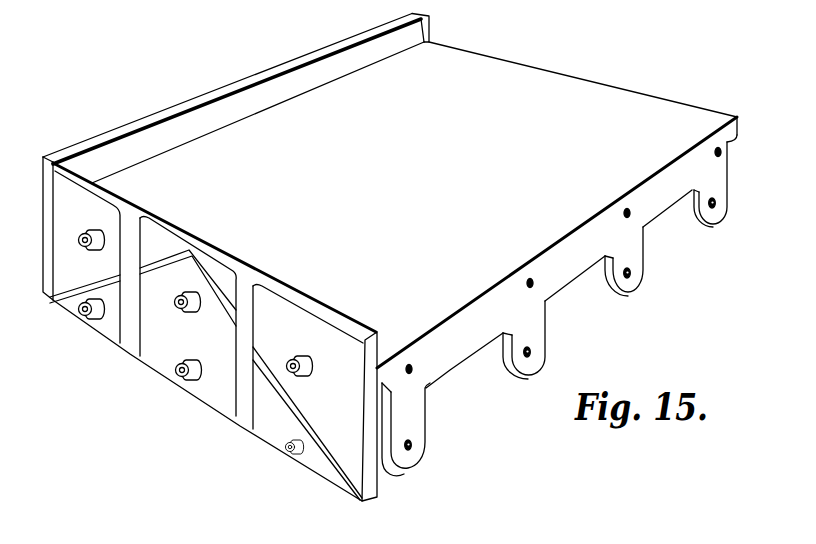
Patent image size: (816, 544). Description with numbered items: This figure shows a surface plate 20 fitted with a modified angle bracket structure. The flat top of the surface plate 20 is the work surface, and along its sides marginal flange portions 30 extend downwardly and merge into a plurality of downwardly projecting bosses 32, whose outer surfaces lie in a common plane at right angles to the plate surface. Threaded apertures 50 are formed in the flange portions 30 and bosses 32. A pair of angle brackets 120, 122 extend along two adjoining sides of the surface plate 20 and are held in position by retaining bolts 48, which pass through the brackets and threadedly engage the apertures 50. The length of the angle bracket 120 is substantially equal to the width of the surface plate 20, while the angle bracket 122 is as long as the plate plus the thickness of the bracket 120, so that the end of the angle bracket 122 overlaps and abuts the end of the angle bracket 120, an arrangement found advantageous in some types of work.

The surface plate 20 is at (692, 91).
The marginal flange portions 30 is at (458, 352).
The downwardly projecting bosses 32 is at (537, 353).
The retaining bolts 48 is at (180, 311).
The threaded apertures 50 is at (722, 153).
The angle bracket 120 is at (277, 283).
The angle bracket 122 is at (296, 62).